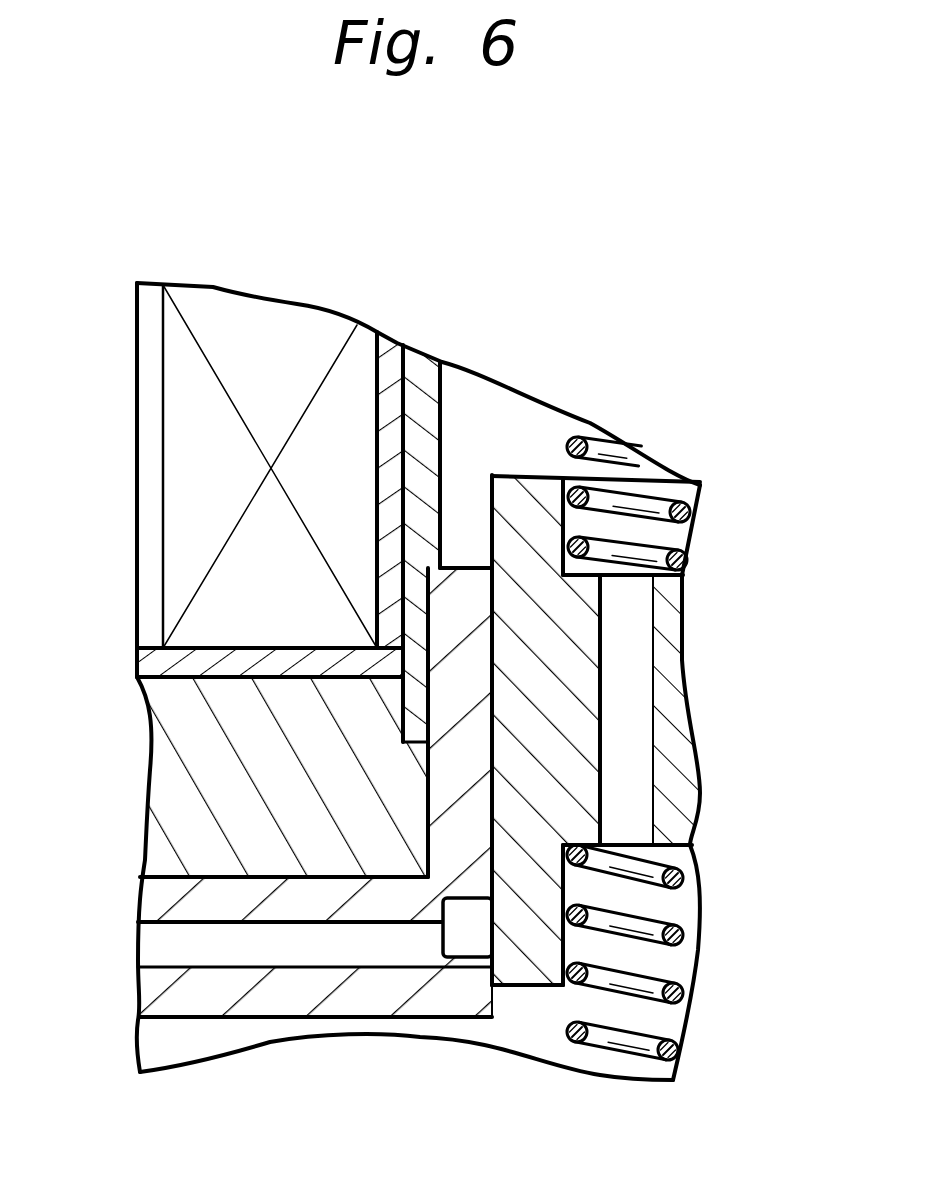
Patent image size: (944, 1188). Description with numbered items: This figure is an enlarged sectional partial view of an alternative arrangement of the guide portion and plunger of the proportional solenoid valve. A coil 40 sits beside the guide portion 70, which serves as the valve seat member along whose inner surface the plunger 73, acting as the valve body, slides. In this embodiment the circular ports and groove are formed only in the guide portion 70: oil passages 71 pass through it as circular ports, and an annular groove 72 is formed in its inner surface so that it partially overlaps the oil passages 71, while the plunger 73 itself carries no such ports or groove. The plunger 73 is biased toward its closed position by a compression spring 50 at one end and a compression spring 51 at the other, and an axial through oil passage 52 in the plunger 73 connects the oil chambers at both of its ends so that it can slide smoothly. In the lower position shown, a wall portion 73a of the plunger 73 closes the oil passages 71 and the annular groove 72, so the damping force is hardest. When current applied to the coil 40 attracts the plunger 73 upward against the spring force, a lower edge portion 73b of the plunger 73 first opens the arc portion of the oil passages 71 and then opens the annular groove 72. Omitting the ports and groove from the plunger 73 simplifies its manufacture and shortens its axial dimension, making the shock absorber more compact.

The coil 40 is at (210, 480).
The compression spring 50 is at (688, 921).
The compression spring 51 is at (697, 507).
The axial through oil passage 52 is at (622, 782).
The guide portion 70 is at (450, 768).
The oil passages 71 is at (310, 950).
The annular groove 72 is at (480, 942).
The plunger 73 is at (562, 705).
The wall portion 73a is at (440, 945).
The lower edge portion 73b is at (500, 987).